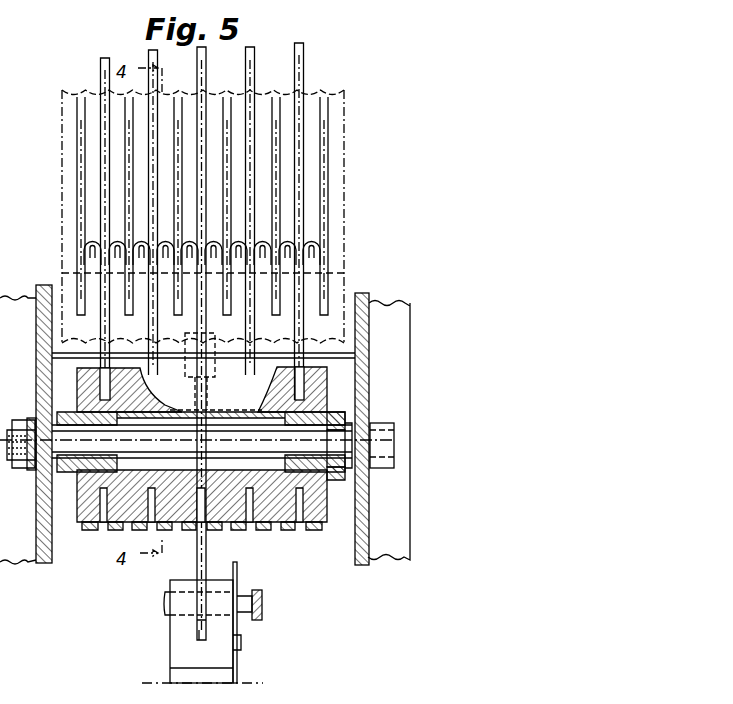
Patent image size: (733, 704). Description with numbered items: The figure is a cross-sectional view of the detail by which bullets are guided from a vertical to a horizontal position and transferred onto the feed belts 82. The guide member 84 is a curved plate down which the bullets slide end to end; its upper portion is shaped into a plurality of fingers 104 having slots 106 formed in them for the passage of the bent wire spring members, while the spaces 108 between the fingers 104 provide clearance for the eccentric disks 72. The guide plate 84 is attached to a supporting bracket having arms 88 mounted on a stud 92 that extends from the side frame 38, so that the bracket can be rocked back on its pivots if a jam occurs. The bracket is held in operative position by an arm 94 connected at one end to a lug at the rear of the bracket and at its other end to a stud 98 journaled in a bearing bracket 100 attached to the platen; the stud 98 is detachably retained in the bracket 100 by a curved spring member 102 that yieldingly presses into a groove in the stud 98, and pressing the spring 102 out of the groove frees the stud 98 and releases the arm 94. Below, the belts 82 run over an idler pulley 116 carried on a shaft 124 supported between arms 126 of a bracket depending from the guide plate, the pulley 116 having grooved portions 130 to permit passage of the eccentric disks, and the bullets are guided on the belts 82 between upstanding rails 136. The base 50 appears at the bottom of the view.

The side frame 38 is at (37, 318).
The base 50 is at (185, 702).
The eccentric disk 72 is at (304, 62).
The feed belt 82 is at (112, 525).
The guide member 84 is at (348, 289).
The arm 88 is at (358, 384).
The stud 92 is at (378, 423).
The arm 94 is at (208, 549).
The stud 98 is at (166, 602).
The bearing bracket 100 is at (172, 645).
The curved spring member 102 is at (238, 572).
The fingers 104 is at (110, 245).
The slots 106 is at (90, 252).
The spaces 108 is at (100, 283).
The idler pulley 116 is at (327, 503).
The shaft 124 is at (327, 475).
The arms 126 is at (57, 468).
The grooved portions 130 is at (100, 382).
The rails 136 is at (55, 354).